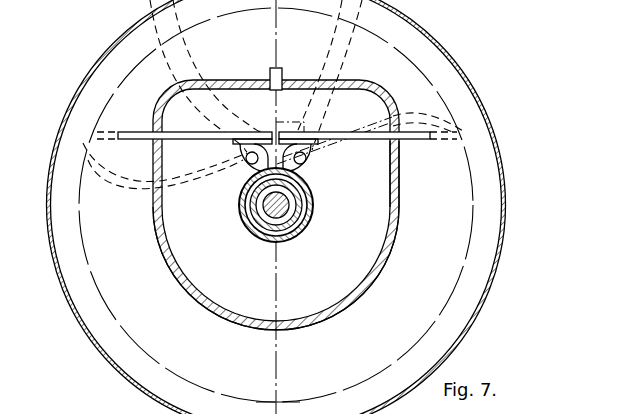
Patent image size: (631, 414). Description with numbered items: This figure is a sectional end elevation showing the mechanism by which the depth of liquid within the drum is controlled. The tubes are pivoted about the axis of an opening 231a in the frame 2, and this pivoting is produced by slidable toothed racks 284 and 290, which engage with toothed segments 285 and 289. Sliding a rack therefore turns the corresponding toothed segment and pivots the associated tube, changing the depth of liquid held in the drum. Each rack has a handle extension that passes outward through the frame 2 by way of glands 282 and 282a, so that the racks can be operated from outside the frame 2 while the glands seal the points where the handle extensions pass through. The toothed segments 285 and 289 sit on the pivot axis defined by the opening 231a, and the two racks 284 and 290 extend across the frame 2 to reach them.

The gland 282 is at (152, 128).
The frame 2 is at (374, 285).
The gland 282a is at (398, 143).
The slidable toothed rack 284 is at (100, 133).
The slidable toothed rack 290 is at (432, 134).
The toothed segment 289 is at (312, 166).
The toothed segment 285 is at (250, 184).
The opening 231a is at (247, 152).